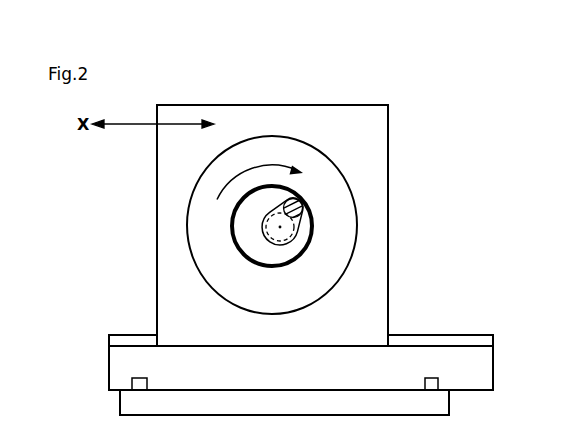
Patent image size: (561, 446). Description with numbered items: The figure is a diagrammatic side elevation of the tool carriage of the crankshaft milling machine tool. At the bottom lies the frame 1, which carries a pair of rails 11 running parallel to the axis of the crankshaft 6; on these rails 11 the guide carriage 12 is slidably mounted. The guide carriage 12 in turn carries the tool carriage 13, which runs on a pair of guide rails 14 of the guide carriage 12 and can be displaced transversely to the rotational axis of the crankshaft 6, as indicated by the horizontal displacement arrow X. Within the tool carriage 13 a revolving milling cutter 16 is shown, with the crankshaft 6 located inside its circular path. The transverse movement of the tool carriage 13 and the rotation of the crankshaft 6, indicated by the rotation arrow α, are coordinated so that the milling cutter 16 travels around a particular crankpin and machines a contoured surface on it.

The frame 1 is at (145, 405).
The crankshaft 6 is at (302, 208).
The rails 11 is at (138, 381).
The guide carriage 12 is at (146, 358).
The tool carriage 13 is at (355, 148).
The guide rails 14 is at (407, 338).
The revolving milling cutter 16 is at (208, 238).